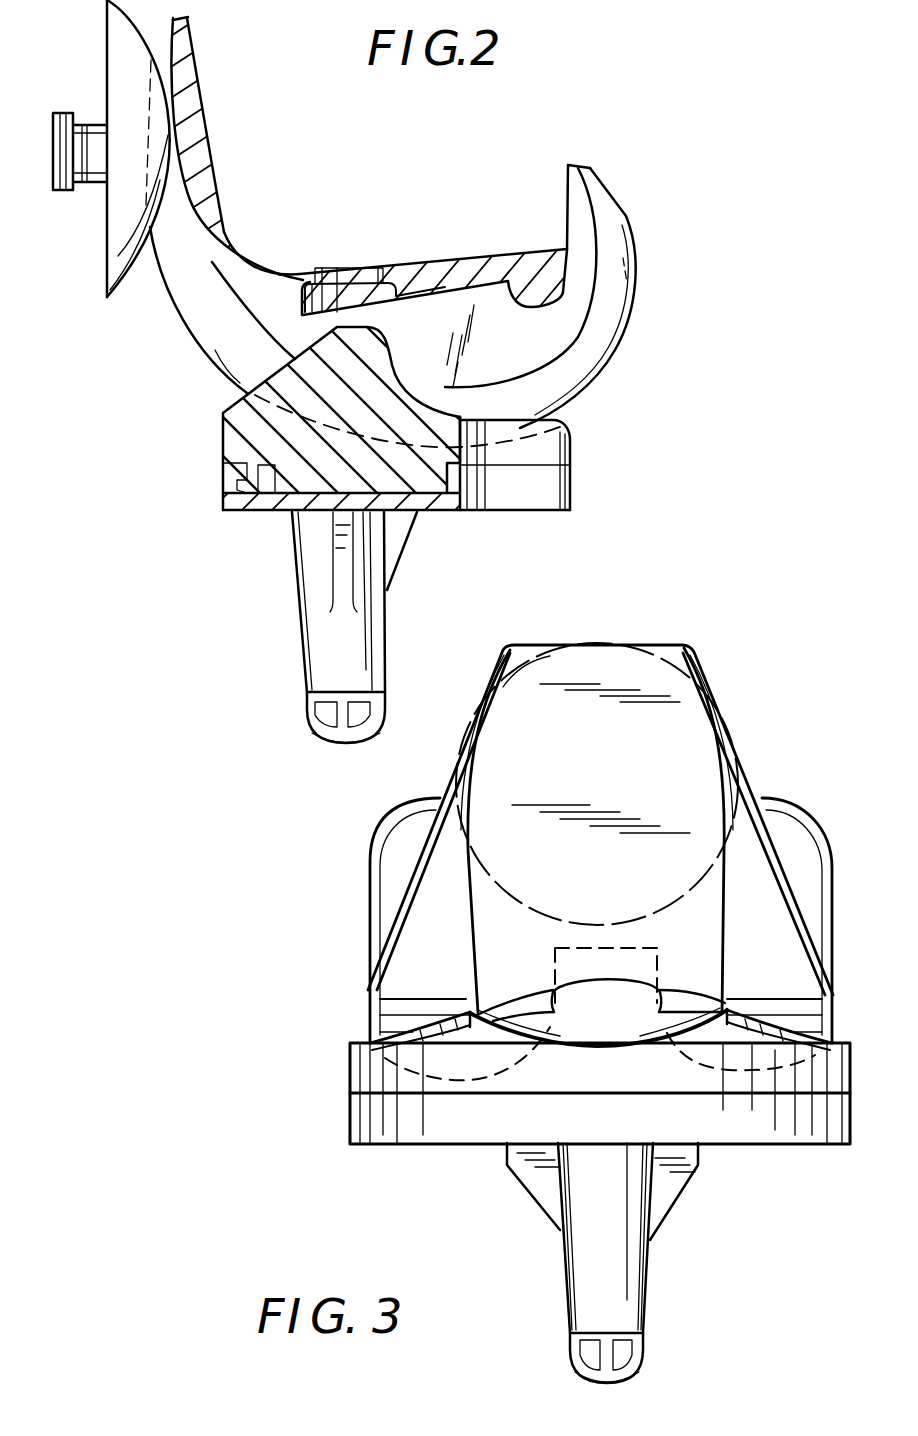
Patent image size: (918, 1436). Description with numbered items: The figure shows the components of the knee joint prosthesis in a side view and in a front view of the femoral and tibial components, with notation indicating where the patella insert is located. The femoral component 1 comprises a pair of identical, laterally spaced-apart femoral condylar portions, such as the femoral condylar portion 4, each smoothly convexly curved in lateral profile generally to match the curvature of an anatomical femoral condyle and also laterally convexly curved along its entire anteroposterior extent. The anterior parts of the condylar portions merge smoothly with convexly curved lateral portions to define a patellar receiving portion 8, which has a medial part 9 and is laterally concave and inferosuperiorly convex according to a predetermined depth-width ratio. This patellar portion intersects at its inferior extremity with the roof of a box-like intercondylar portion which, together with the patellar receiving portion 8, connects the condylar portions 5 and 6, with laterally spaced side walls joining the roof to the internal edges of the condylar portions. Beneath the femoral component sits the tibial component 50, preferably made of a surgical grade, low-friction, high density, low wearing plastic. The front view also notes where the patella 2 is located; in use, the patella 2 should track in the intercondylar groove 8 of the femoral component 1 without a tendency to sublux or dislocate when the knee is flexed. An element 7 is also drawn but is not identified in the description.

In FIG. 2, the femoral component 1 is at (288, 270).
In FIG. 2, the patella 2 is at (107, 36).
In FIG. 2, the femoral condylar portion 4 is at (626, 221).
In FIG. 3, the condylar portion 5 is at (705, 1061).
In FIG. 2, the condylar portion 6 is at (228, 372).
In FIG. 3, the condylar portion 6 is at (505, 1060).
In FIG. 3, the intercondylar eminence 7 is at (690, 1004).
In FIG. 3, the patellar receiving portion 8 is at (690, 732).
In FIG. 3, the medial part 9 is at (590, 710).
In FIG. 3, the tibial component 50 is at (850, 1058).